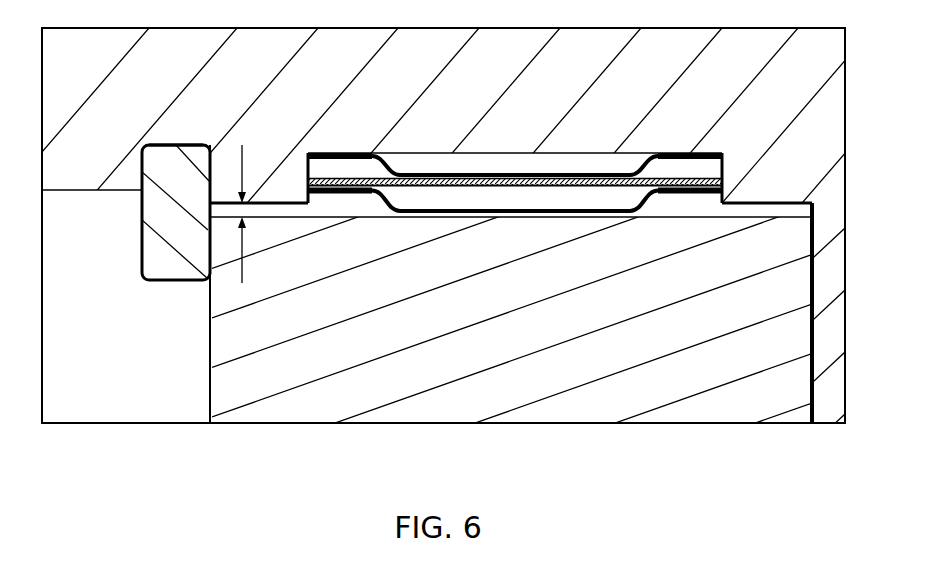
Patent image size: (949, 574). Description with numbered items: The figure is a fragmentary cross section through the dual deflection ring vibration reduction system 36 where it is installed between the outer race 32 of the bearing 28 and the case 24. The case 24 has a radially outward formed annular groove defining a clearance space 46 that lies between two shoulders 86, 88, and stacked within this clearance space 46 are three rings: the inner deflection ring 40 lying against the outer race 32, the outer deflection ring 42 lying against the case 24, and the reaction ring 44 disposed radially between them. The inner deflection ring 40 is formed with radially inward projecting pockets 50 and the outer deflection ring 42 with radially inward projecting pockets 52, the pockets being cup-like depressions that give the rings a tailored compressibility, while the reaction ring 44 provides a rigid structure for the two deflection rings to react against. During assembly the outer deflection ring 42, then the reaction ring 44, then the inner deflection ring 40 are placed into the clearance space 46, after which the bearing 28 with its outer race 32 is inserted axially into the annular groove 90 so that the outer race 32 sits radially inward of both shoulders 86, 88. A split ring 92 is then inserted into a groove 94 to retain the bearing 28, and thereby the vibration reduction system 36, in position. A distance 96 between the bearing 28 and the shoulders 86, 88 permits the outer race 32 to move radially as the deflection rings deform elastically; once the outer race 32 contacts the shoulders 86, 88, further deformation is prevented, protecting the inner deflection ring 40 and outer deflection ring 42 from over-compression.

The case 24 is at (735, 92).
The bearing 28 is at (818, 332).
The outer race 32 is at (327, 370).
The dual deflection ring vibration reduction system 36 is at (445, 228).
The inner deflection ring 40 is at (645, 197).
The outer deflection ring 42 is at (654, 187).
The reaction ring 44 is at (348, 180).
The clearance space 46 is at (438, 163).
The pockets 50 is at (558, 170).
The pockets 52 is at (628, 172).
The shoulder 86 is at (287, 192).
The shoulder 88 is at (778, 203).
The annular groove 90 is at (813, 237).
The split ring 92 is at (155, 247).
The groove 94 is at (147, 150).
The distance 96 is at (240, 276).